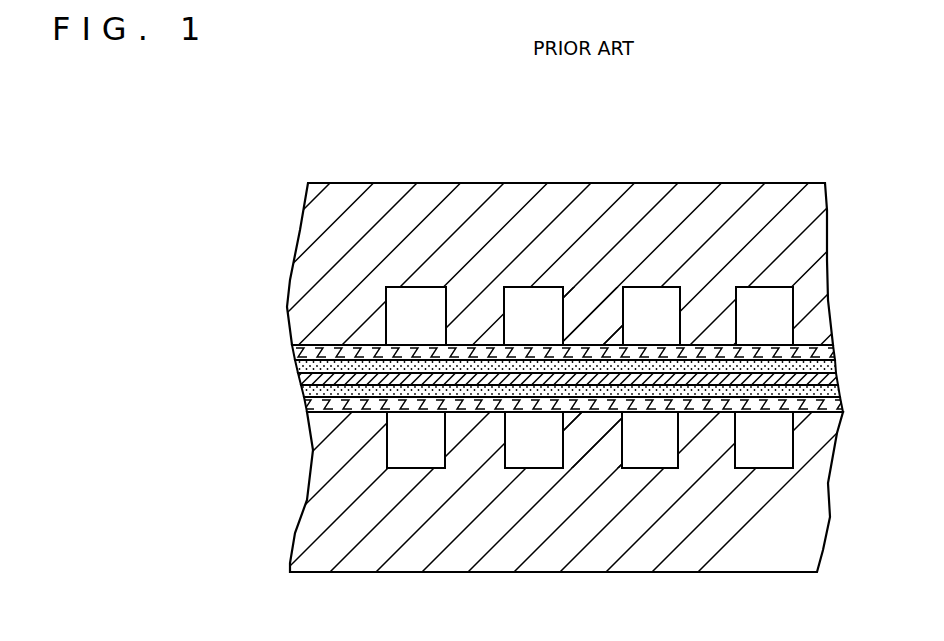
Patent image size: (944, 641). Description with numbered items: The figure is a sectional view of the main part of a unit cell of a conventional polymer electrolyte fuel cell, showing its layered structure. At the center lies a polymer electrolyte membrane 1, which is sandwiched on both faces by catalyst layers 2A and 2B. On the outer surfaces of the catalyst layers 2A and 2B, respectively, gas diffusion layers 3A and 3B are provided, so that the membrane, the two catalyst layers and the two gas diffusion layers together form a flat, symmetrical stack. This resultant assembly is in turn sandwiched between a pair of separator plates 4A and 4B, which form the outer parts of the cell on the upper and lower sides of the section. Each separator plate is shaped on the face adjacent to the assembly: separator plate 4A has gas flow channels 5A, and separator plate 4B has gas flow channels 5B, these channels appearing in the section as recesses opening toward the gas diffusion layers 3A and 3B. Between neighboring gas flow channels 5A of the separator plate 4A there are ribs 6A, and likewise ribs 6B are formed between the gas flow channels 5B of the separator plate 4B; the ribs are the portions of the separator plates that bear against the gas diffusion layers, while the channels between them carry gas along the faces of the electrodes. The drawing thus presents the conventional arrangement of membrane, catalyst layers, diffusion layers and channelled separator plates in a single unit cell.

The polymer electrolyte membrane 1 is at (840, 378).
The catalyst layer 2A is at (840, 366).
The catalyst layer 2B is at (307, 390).
The gas diffusion layer 3A is at (812, 337).
The gas diffusion layer 3B is at (305, 408).
The separator plate 4A is at (780, 192).
The separator plate 4B is at (793, 527).
The gas flow channel 5A is at (652, 303).
The gas flow channel 5B is at (657, 447).
The rib 6A is at (588, 313).
The rib 6B is at (592, 435).